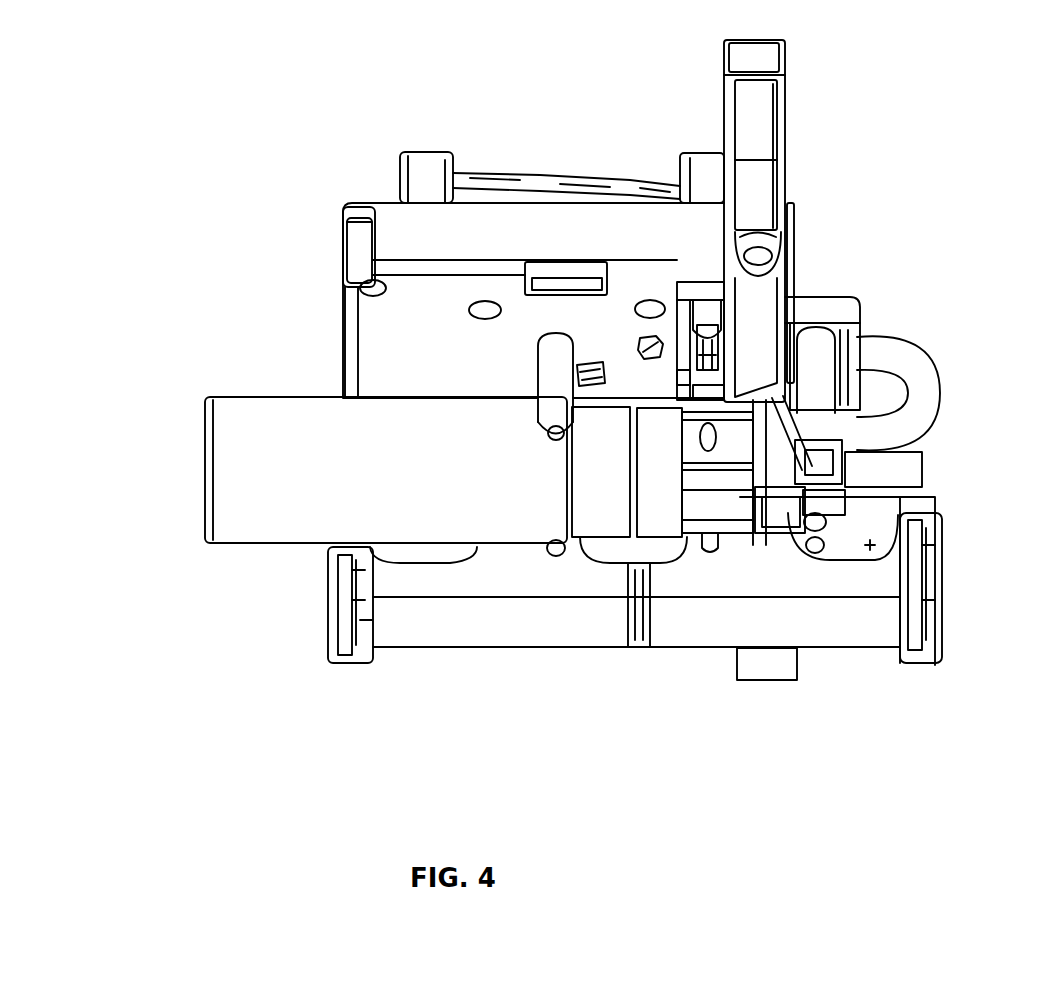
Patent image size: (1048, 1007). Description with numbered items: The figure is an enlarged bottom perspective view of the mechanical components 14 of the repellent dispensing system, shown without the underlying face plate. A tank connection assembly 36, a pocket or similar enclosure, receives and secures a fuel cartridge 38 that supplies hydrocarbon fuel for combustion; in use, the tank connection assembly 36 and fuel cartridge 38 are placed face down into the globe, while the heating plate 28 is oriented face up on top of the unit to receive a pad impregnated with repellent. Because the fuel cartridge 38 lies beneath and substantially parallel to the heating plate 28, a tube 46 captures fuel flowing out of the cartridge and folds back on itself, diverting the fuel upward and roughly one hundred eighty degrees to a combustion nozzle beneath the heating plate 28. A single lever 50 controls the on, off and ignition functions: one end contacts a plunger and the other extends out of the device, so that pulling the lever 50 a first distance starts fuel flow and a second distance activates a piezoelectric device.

The mechanical components 14 is at (614, 379).
The heating plate 28 is at (655, 190).
The tank connection assembly 36 is at (603, 527).
The fuel cartridge 38 is at (268, 527).
The tube 46 is at (932, 400).
The lever 50 is at (768, 57).